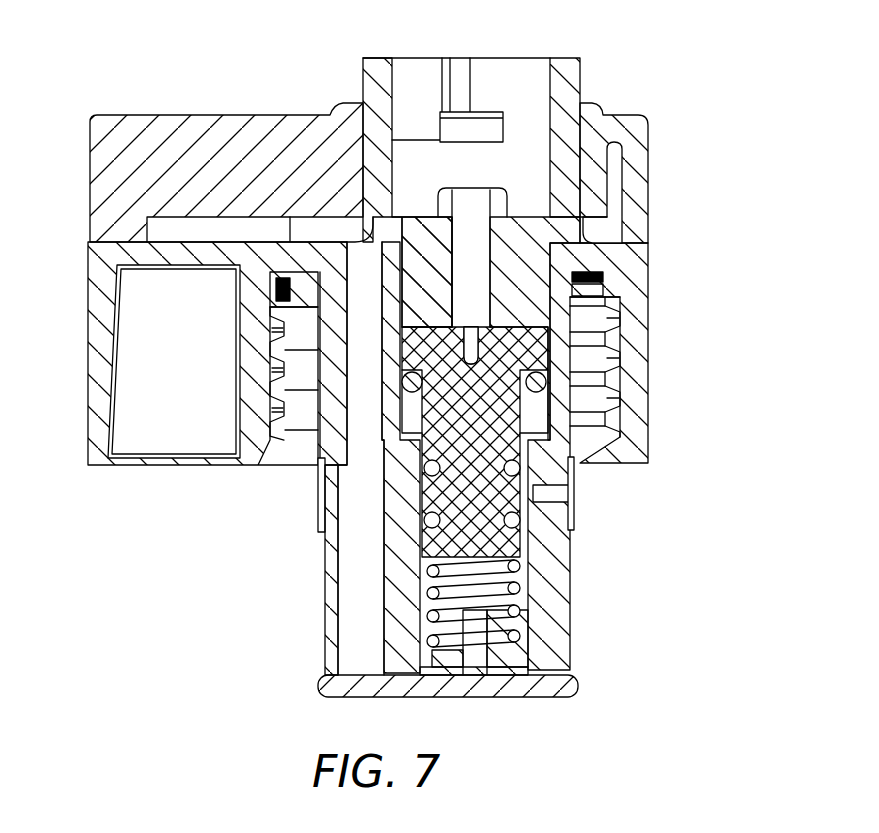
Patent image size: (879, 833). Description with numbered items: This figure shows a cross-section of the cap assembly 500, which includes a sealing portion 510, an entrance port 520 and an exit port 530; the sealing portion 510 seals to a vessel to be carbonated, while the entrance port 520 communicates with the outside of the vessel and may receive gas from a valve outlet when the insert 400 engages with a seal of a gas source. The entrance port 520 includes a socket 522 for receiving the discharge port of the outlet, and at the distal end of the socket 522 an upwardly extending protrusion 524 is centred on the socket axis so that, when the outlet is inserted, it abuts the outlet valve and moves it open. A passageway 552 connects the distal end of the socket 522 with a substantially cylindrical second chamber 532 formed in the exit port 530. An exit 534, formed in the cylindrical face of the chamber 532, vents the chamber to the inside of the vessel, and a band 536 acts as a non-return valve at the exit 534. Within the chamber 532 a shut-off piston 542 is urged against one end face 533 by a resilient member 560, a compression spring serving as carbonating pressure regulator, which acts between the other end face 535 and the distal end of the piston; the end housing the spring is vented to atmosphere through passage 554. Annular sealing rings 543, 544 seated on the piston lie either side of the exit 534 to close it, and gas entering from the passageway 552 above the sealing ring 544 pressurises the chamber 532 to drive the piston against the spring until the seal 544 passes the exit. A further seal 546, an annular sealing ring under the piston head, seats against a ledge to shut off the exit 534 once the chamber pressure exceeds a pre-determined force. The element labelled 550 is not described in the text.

The cap assembly 500 is at (126, 52).
The entrance port 520 is at (585, 82).
The socket 522 is at (493, 92).
The protrusion 524 is at (532, 175).
The passageway 552 is at (476, 203).
The insert 400 is at (583, 233).
The outer nut 550 is at (100, 262).
The sealing portion 510 is at (278, 368).
The passage 554 is at (270, 284).
The end face 533 is at (560, 300).
The seal 546 is at (620, 384).
The shut-off piston 542 is at (490, 546).
The second chamber 532 is at (535, 420).
The annular sealing ring 543 is at (432, 520).
The annular sealing ring 544 is at (432, 467).
The exit 534 is at (545, 493).
The band 536 is at (572, 525).
The resilient member 560 is at (518, 588).
The exit port 530 is at (582, 610).
The end face 535 is at (526, 676).